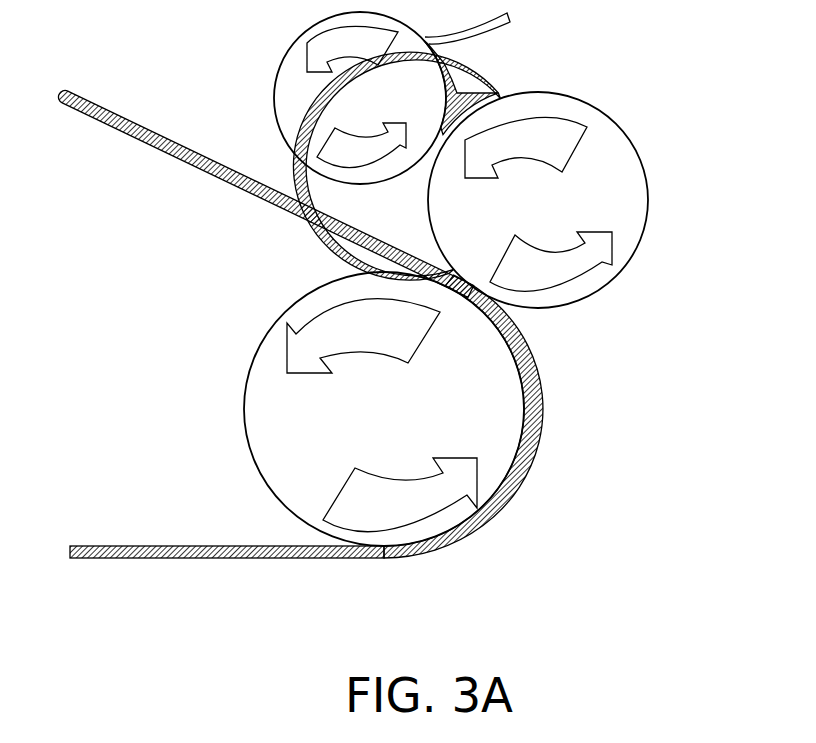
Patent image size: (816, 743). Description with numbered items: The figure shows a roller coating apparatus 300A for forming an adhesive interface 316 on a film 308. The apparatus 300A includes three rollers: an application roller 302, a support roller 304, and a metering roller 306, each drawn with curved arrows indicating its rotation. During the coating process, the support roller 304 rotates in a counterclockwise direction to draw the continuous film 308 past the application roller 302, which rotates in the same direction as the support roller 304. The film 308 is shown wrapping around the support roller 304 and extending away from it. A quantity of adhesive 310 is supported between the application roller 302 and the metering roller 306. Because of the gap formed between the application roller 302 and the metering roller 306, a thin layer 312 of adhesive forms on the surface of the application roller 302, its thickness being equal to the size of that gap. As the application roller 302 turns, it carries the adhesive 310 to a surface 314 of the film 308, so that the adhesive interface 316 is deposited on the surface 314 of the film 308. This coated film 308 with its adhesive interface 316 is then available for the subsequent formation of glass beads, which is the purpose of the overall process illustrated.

The roller coating apparatus 300A is at (598, 617).
The application roller 302 is at (638, 203).
The support roller 304 is at (264, 420).
The metering roller 306 is at (280, 74).
The film 308 is at (118, 547).
The adhesive 310 is at (462, 96).
The thin layer of adhesive 312 is at (419, 220).
The surface of film 314 is at (542, 415).
The adhesive interface 316 is at (92, 104).